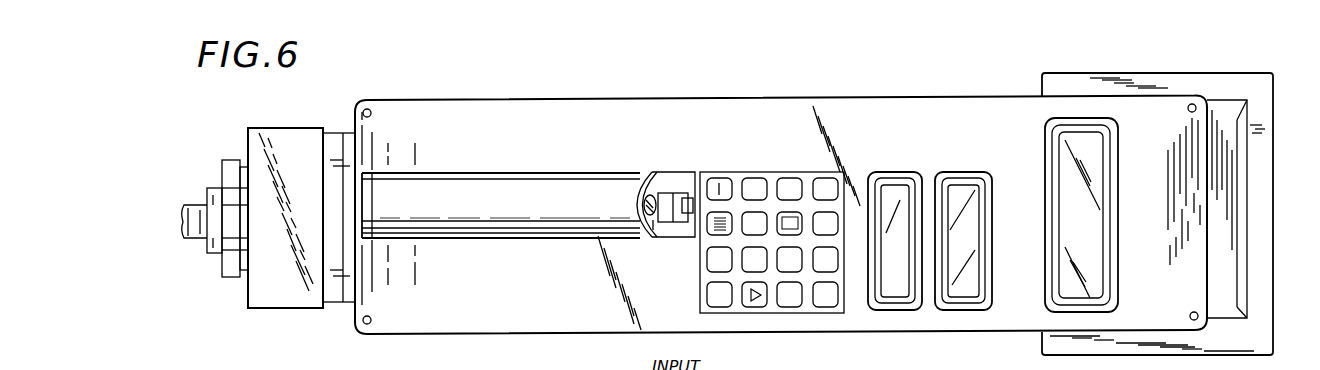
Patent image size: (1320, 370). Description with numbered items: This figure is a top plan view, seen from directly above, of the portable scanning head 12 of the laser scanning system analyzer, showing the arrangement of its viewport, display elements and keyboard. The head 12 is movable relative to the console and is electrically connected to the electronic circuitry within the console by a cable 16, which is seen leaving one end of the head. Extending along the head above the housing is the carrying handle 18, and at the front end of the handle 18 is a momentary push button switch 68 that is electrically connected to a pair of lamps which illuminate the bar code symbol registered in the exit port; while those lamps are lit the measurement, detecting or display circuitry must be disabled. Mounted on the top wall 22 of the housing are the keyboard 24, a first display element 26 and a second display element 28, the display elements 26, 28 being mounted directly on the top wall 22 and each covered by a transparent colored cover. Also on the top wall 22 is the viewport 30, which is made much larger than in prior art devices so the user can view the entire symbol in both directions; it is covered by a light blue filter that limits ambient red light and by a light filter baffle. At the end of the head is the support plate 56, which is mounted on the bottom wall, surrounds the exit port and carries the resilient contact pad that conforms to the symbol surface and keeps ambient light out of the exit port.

The portable scanning head 12 is at (603, 88).
The cable 16 is at (190, 216).
The carrying handle 18 is at (548, 223).
The top wall 22 is at (477, 123).
The keyboard 24 is at (748, 174).
The first display element 26 is at (962, 178).
The second display element 28 is at (888, 178).
The viewport 30 is at (1065, 153).
The support plate 56 is at (1125, 73).
The momentary push button switch 68 is at (668, 193).